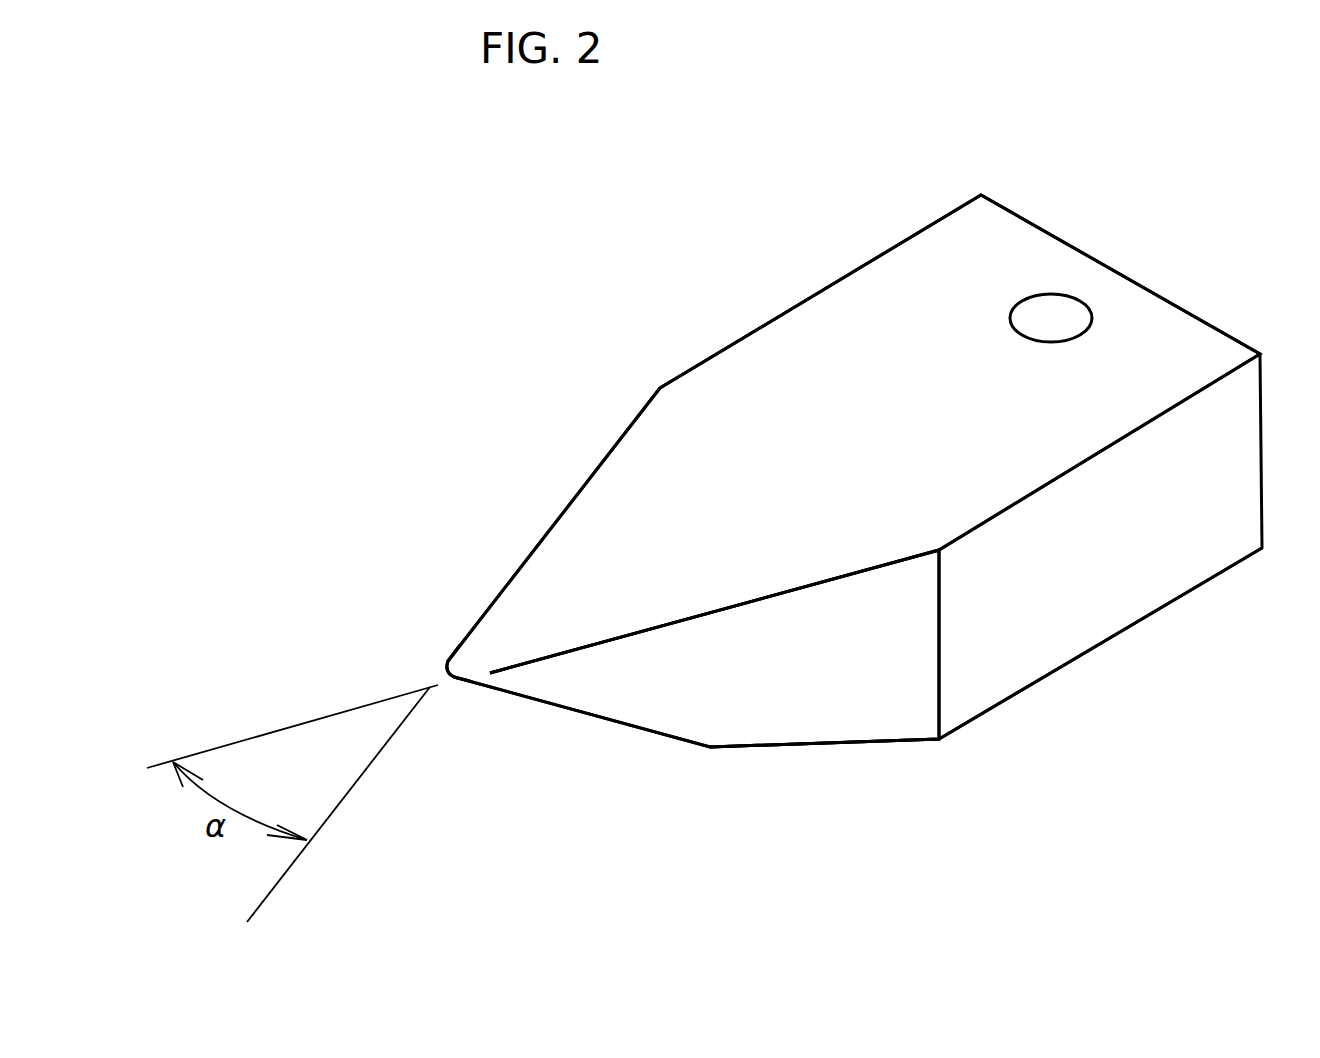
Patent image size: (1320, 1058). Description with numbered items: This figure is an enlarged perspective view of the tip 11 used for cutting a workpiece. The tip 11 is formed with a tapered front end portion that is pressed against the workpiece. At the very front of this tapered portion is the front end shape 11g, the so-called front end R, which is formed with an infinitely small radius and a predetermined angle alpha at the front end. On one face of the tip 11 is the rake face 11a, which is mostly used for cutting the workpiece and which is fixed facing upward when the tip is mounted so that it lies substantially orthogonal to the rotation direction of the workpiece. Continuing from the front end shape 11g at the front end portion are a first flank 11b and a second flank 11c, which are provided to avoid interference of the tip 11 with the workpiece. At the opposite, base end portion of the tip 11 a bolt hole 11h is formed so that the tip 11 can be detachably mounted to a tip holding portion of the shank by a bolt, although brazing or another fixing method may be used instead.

The tip 11 is at (758, 303).
The rake face 11a is at (625, 473).
The first flank 11b is at (502, 688).
The second flank 11c is at (670, 740).
The front end shape 11g is at (440, 668).
The bolt hole 11h is at (1055, 313).